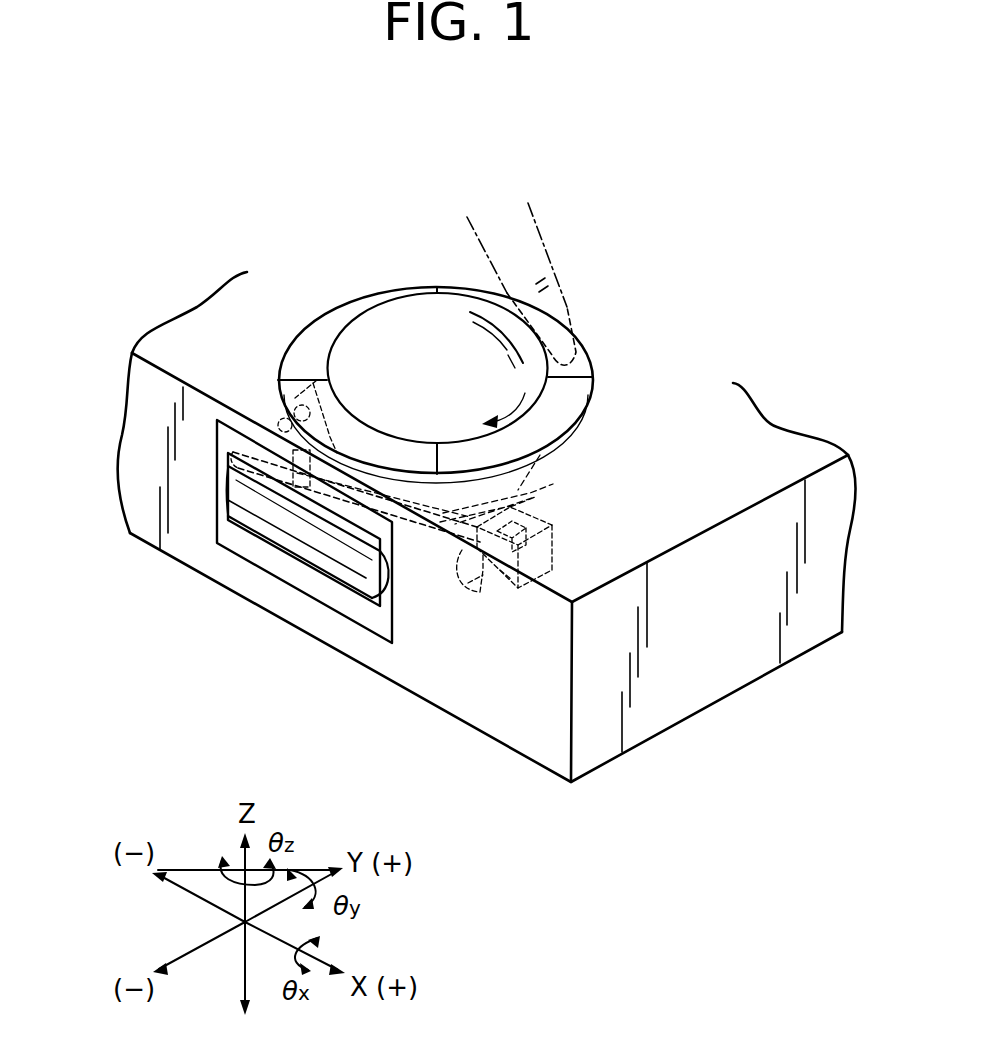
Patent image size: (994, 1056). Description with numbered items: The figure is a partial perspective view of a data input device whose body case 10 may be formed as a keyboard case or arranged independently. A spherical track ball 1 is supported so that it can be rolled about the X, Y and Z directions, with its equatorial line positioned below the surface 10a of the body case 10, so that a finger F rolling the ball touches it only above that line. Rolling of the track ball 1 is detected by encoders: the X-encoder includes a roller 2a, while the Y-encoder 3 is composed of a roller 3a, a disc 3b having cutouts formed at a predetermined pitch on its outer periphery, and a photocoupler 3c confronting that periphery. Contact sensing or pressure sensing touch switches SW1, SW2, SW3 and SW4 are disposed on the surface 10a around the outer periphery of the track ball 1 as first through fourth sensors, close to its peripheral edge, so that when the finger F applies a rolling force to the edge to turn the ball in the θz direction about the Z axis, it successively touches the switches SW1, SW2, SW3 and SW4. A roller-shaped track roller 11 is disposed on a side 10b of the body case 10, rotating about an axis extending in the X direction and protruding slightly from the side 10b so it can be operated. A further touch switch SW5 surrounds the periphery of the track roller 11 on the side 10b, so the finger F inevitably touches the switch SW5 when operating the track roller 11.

The track ball 1 is at (410, 323).
The roller 2a is at (347, 463).
The Y-encoder 3 is at (437, 580).
The roller 3a is at (533, 495).
The disc 3b is at (481, 590).
The photocoupler 3c is at (555, 538).
The body case 10 is at (722, 670).
The surface 10a is at (747, 453).
The side 10b is at (530, 730).
The track roller 11 is at (285, 525).
The touch switch SW1 is at (580, 362).
The touch switch SW2 is at (568, 402).
The touch switch SW3 is at (278, 380).
The touch switch SW4 is at (330, 323).
The touch switch SW5 is at (343, 600).
The finger F is at (543, 241).